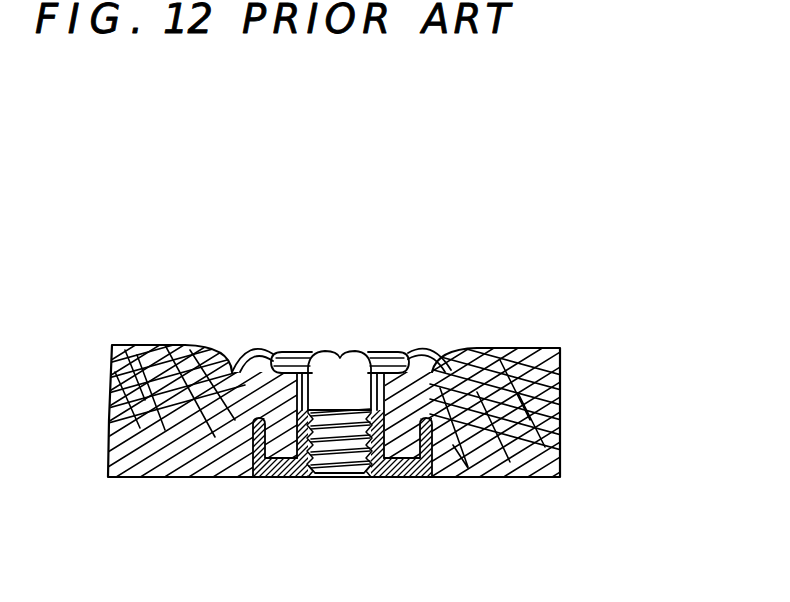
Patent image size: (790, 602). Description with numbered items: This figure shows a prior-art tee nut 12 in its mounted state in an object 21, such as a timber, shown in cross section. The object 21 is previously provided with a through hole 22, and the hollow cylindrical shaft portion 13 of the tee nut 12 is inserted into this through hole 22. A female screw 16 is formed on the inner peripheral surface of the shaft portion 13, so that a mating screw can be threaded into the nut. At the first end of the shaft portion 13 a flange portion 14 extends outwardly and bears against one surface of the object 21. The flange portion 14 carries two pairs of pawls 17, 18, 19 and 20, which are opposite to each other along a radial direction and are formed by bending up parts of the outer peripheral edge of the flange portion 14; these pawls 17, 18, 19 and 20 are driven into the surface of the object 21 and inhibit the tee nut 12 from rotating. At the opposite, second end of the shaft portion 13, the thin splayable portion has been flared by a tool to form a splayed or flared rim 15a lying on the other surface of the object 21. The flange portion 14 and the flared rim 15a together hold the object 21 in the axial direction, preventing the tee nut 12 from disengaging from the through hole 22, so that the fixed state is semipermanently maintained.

The tee nut 12 is at (305, 418).
The shaft portion 13 is at (340, 383).
The flange portion 14 is at (395, 470).
The splayed or flared rim 15a is at (393, 350).
The female screw 16 is at (353, 453).
The pawl 17 is at (228, 481).
The pawl 18 is at (205, 475).
The pawl 19 is at (431, 480).
The pawl 20 is at (452, 475).
The object 21 is at (552, 382).
The through hole 22 is at (300, 352).